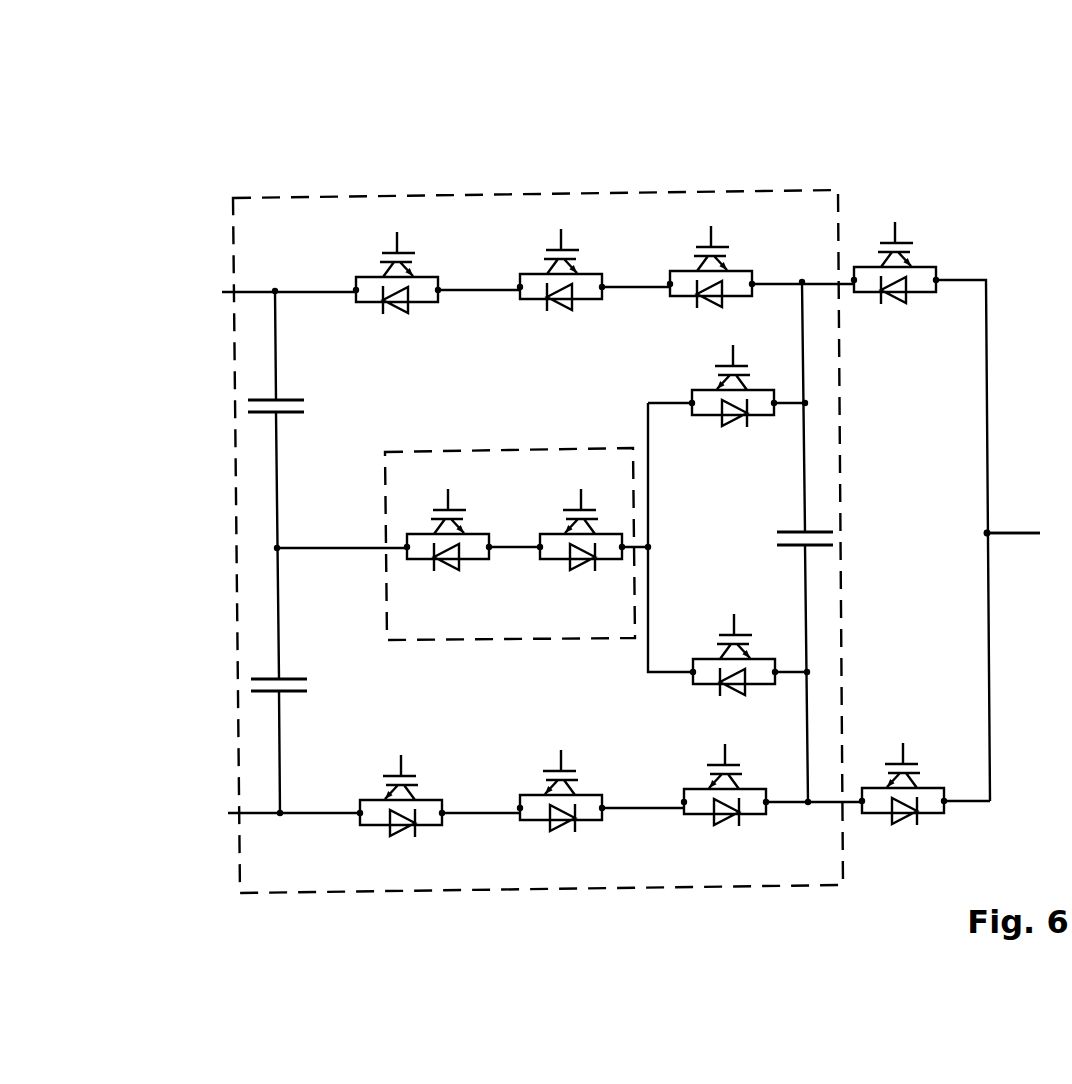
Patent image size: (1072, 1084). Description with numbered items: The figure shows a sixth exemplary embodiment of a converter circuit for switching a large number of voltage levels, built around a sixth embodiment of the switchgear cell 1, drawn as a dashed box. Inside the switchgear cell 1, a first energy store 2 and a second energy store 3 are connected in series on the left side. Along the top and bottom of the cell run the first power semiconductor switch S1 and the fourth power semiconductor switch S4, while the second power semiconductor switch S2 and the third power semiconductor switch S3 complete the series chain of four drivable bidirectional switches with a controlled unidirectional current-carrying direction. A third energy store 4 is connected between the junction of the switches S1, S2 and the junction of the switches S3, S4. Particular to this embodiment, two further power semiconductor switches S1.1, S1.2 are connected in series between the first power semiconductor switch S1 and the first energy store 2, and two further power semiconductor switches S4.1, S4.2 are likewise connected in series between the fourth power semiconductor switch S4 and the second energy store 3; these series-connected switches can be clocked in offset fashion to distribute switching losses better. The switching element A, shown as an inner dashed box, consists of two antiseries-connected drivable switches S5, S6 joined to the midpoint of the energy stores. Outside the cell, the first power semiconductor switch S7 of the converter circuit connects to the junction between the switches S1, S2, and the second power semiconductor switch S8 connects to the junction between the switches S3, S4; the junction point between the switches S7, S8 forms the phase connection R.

The switchgear cell 1 is at (450, 195).
The first energy store 2 is at (268, 398).
The second energy store 3 is at (269, 679).
The third energy store 4 is at (819, 528).
The switching element with a controlled bidirectional current-carrying direction A is at (383, 452).
The further power semiconductor switch S1.1 is at (413, 267).
The further power semiconductor switch S1.2 is at (574, 265).
The first power semiconductor switch of the switchgear cell S1 is at (723, 263).
The second power semiconductor switch of the switchgear cell S2 is at (740, 386).
The third power semiconductor switch of the switchgear cell S3 is at (742, 655).
The fourth power semiconductor switch of the switchgear cell S4 is at (729, 801).
The further power semiconductor switch S4.1 is at (417, 809).
The further power semiconductor switch S4.2 is at (577, 807).
The drivable bidirectional power semiconductor switch with a controlled unidirection S5 is at (448, 524).
The drivable bidirectional power semiconductor switch with a controlled unidirection S6 is at (583, 523).
The first power semiconductor switch of the converter circuit S7 is at (909, 259).
The second power semiconductor switch of the converter circuit S8 is at (906, 800).
The phase R is at (1026, 537).